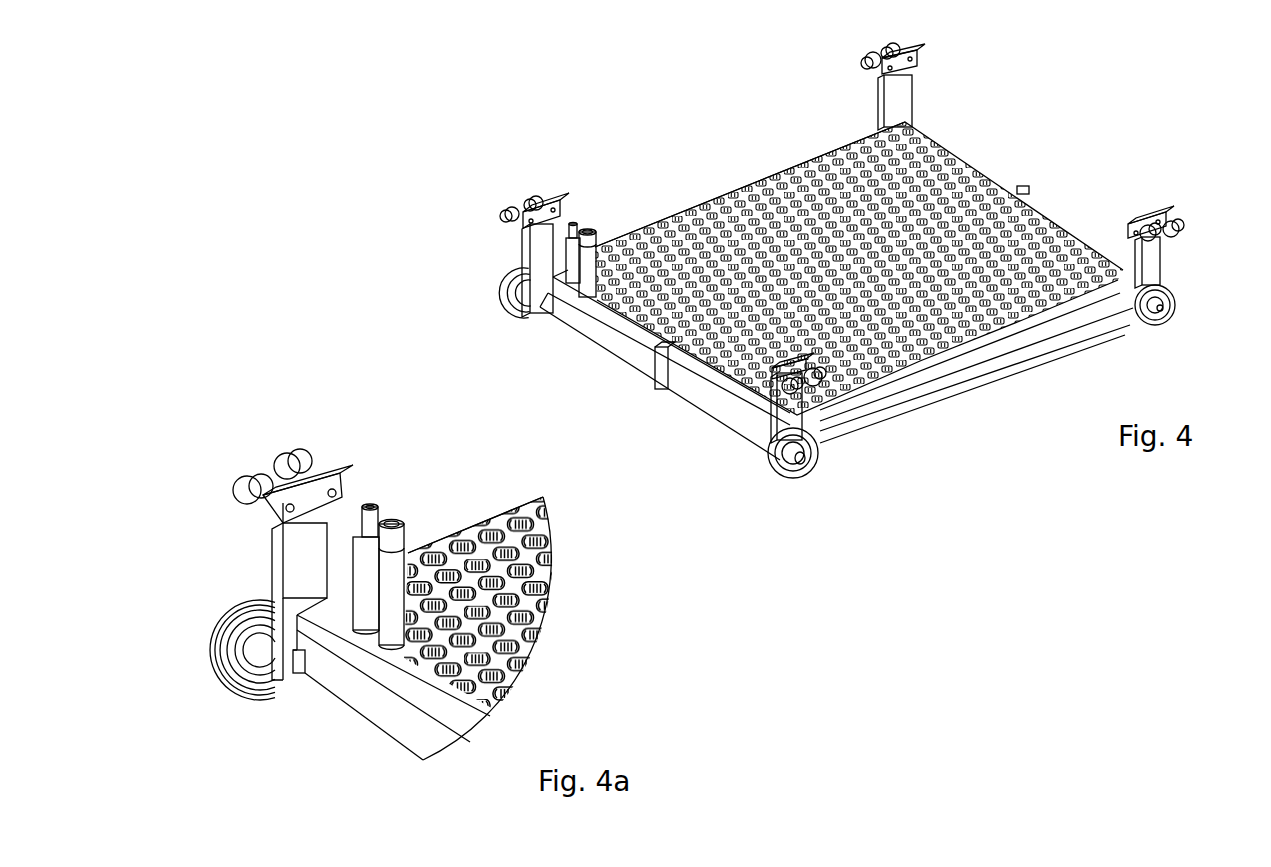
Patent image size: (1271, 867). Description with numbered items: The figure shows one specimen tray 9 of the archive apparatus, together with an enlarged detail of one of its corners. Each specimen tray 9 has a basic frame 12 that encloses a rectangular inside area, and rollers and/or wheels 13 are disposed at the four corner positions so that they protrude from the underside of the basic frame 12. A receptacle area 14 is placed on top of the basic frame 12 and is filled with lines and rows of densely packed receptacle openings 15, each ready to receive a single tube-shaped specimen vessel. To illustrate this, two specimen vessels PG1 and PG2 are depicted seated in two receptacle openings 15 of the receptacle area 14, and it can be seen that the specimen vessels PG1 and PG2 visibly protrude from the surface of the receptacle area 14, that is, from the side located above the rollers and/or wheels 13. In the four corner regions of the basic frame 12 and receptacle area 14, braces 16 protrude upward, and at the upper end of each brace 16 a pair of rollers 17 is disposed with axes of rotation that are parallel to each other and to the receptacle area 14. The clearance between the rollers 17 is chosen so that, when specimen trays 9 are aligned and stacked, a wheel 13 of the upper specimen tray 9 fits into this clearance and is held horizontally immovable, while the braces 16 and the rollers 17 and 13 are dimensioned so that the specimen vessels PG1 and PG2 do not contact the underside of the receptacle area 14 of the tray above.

In FIG. 4, the specimen tray 9 is at (922, 428).
In FIG. 4A, the specimen tray 9 is at (448, 508).
In FIG. 4, the basic frame 12 is at (730, 423).
In FIG. 4A, the basic frame 12 is at (363, 703).
In FIG. 4, the rollers and/or wheels 13 is at (790, 480).
In FIG. 4A, the rollers and/or wheels 13 is at (240, 652).
In FIG. 4, the receptacle area 14 is at (973, 170).
In FIG. 4A, the receptacle area 14 is at (503, 522).
In FIG. 4, the receptacle openings 15 is at (793, 163).
In FIG. 4A, the receptacle openings 15 is at (553, 598).
In FIG. 4, the braces 16 is at (527, 250).
In FIG. 4A, the braces 16 is at (272, 555).
In FIG. 4, the rollers 17 is at (1206, 156).
In FIG. 4A, the rollers 17 is at (240, 470).
In FIG. 4, the specimen vessel PG1 is at (575, 226).
In FIG. 4A, the specimen vessel PG1 is at (357, 508).
In FIG. 4, the specimen vessel PG2 is at (594, 246).
In FIG. 4A, the specimen vessel PG2 is at (437, 548).